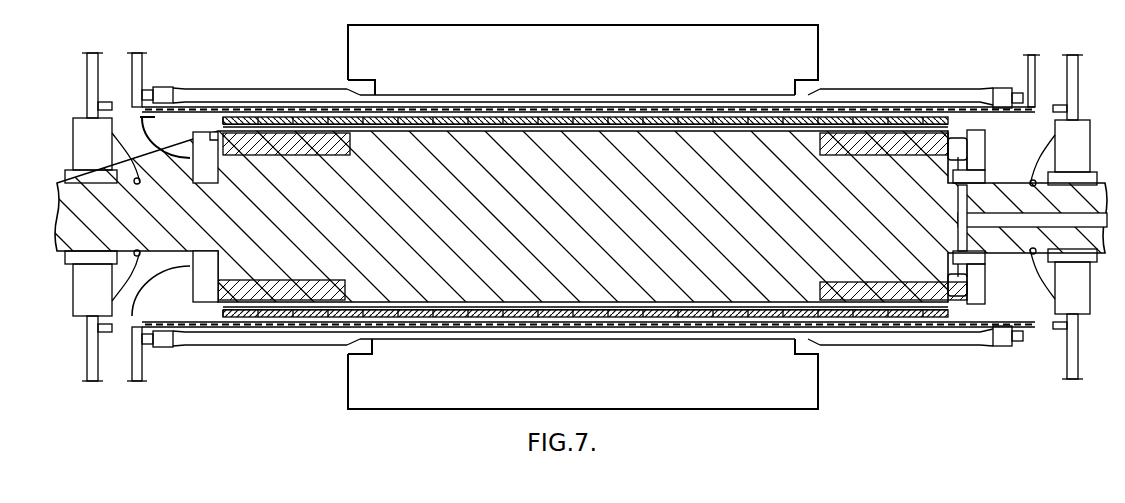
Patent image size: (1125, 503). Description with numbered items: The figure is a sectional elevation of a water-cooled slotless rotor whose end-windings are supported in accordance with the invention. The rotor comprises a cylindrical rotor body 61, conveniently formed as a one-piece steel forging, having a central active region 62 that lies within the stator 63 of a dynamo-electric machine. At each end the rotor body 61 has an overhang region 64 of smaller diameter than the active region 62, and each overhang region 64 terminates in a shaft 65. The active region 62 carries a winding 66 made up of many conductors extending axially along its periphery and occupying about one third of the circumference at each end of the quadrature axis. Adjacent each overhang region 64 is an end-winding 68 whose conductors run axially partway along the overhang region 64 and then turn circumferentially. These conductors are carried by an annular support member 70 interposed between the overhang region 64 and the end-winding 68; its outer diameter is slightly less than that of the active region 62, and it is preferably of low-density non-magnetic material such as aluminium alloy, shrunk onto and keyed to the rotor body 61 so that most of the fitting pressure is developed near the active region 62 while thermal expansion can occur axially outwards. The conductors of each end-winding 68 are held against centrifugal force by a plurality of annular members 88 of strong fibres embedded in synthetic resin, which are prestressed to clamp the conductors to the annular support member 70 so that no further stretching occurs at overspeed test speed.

The rotor body 61 is at (630, 205).
The active region 62 is at (576, 131).
The stator 63 is at (349, 70).
The overhang region 64 is at (268, 151).
The shaft 65 is at (178, 250).
The winding 66 is at (528, 125).
The end-winding 68 is at (243, 128).
The annular support member 70 is at (223, 141).
The annular member 88 is at (296, 122).